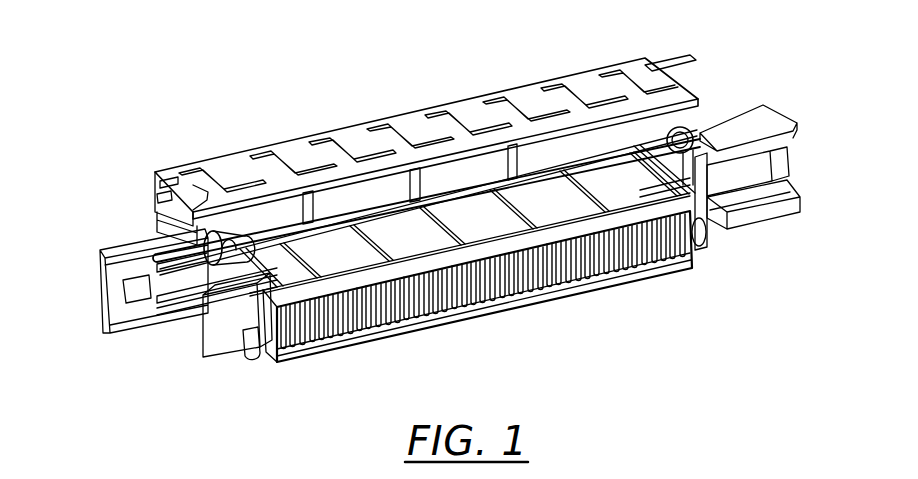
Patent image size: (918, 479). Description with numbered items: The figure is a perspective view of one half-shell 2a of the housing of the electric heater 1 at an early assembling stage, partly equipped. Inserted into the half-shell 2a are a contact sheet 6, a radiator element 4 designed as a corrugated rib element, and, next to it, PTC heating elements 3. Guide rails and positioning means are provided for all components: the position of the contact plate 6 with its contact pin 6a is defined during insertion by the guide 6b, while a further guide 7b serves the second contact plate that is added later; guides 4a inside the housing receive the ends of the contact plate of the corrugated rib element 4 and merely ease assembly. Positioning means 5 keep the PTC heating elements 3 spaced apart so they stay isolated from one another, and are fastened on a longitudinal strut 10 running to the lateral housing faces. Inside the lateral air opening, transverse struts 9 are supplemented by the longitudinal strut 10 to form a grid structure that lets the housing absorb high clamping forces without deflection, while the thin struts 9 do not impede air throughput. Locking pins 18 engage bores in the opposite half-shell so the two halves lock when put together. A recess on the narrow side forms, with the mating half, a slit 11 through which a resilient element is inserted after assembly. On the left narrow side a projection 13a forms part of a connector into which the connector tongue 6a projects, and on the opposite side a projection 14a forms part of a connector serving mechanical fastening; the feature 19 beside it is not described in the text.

The electronic module assembly 1 is at (222, 118).
The half-shell 2a is at (405, 120).
The PTC heating elements 3 is at (607, 288).
The radiator element 4 is at (457, 322).
The guides 4a is at (265, 335).
The positioning means 5 is at (312, 245).
The contact sheet 6 is at (400, 338).
The contact pin 6a is at (173, 303).
The guide 6b is at (207, 295).
The guide 7b is at (200, 250).
The transverse struts 9 is at (530, 158).
The longitudinal strut 10 is at (265, 235).
The opening 11 is at (157, 197).
The projection 13a is at (100, 251).
The projection 14a is at (767, 108).
The locking pins 18 is at (240, 363).
The ring 19 is at (700, 135).